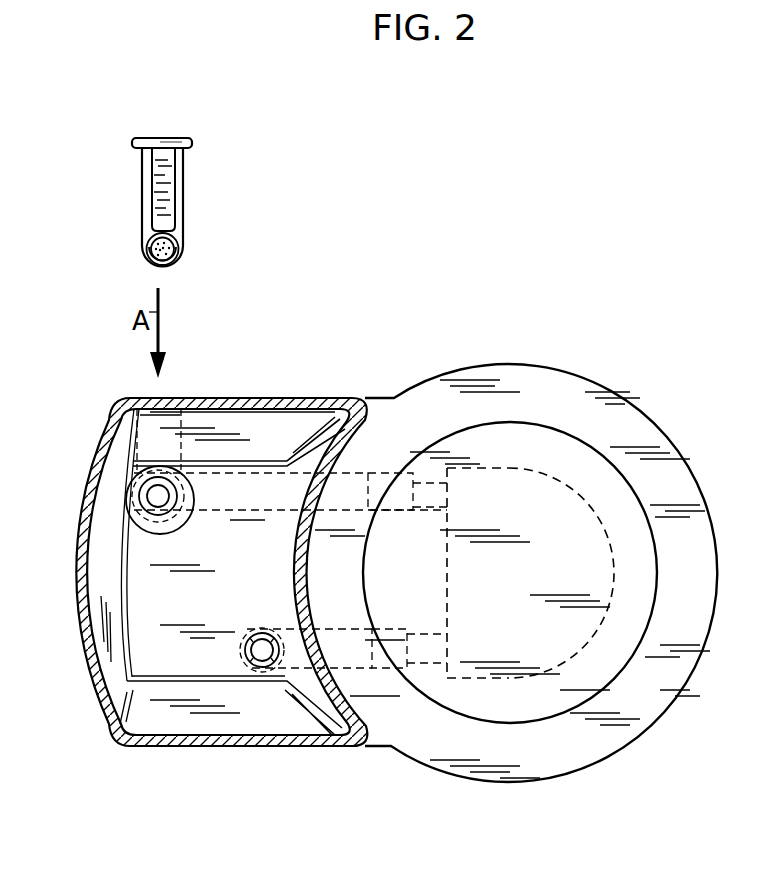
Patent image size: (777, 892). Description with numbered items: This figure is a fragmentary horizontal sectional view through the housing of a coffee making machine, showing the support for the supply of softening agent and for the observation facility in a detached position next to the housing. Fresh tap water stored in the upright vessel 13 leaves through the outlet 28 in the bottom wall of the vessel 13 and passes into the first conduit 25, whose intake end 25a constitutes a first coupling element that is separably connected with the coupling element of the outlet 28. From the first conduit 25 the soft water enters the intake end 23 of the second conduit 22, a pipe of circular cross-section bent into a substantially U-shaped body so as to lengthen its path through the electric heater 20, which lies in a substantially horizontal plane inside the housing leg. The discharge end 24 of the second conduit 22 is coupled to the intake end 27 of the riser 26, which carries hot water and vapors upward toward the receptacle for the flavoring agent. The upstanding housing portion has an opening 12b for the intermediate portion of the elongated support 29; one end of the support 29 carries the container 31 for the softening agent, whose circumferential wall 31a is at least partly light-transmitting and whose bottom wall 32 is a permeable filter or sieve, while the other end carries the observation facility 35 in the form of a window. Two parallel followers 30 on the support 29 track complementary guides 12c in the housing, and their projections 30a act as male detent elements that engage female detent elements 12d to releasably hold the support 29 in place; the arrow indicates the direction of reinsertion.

The opening 12b is at (172, 398).
The guides 12c is at (181, 456).
The female detent elements 12d is at (180, 440).
The vessel 13 is at (193, 747).
The electric heater 20 is at (547, 527).
The second conduit 22 is at (430, 493).
The intake end of the second conduit 23 is at (367, 495).
The discharge end of the second conduit 24 is at (370, 652).
The first conduit 25 is at (228, 497).
The intake end of the first conduit 25a is at (135, 522).
The riser 26 is at (258, 662).
The intake end of the riser 27 is at (288, 662).
The outlet 28 is at (150, 506).
The support 29 is at (193, 213).
The followers 30 is at (181, 182).
The projections 30a is at (192, 197).
The container 31 is at (188, 262).
The circumferential wall 31a is at (178, 268).
The bottom wall 32 is at (168, 258).
The observation facility 35 is at (165, 135).